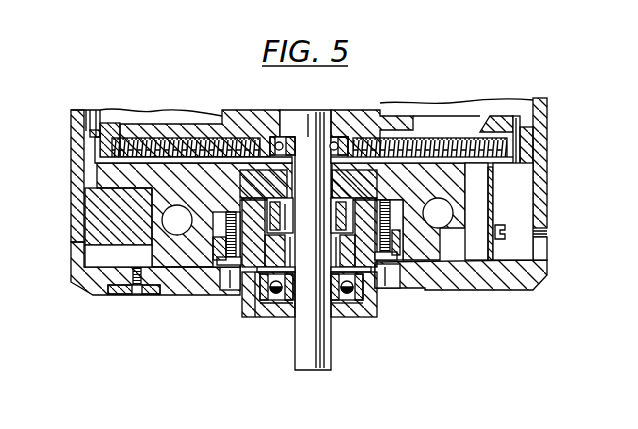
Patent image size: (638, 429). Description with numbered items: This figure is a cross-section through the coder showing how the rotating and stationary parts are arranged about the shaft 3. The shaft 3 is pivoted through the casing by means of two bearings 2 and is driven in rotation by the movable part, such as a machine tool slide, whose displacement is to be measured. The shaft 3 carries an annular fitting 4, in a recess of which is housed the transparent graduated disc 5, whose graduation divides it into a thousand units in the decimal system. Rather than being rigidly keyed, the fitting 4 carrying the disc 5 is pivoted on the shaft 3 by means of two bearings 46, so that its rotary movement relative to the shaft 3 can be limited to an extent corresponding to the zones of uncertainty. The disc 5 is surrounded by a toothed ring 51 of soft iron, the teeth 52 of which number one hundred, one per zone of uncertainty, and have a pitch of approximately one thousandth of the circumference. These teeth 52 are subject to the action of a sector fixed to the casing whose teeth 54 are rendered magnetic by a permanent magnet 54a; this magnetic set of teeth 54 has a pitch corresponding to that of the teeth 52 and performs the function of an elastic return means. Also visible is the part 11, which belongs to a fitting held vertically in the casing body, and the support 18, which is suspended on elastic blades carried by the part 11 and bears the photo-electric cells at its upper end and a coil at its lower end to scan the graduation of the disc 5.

The bearings 2 is at (263, 300).
The shaft 3 is at (308, 363).
The annular fitting 4 is at (252, 122).
The transparent graduated disc 5 is at (442, 130).
The part 11 is at (253, 235).
The support 18 is at (375, 293).
The bearings 46 is at (349, 110).
The toothed ring 51 is at (113, 126).
The teeth 52 is at (90, 130).
The teeth 54 is at (93, 157).
The permanent magnet 54a is at (92, 217).